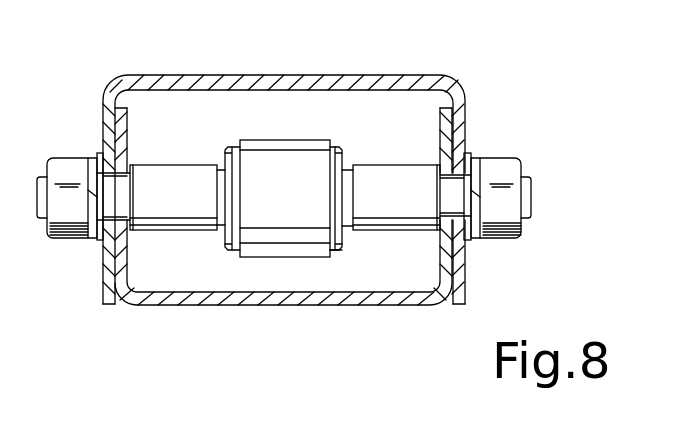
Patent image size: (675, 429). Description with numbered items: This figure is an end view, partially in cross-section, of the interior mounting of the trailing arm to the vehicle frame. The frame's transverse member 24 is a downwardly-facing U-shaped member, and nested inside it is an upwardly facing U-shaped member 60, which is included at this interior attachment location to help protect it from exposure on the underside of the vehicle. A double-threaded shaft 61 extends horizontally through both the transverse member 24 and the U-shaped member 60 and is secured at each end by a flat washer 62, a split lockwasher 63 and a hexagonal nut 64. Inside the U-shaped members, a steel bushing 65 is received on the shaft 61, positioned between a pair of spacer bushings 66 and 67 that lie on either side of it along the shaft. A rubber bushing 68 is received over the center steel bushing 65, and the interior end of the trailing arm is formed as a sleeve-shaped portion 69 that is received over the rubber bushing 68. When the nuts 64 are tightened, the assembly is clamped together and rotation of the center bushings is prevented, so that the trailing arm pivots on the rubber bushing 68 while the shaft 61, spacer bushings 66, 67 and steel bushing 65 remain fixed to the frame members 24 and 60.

The transverse member 24 is at (238, 85).
The U-shaped member 60 is at (300, 298).
The double-threaded shaft 61 is at (528, 180).
The flat washer 62 is at (468, 243).
The split lockwasher 63 is at (477, 172).
The hexagonal nut 64 is at (512, 237).
The steel bushing 65 is at (342, 245).
The spacer bushing 66 is at (182, 165).
The spacer bushing 67 is at (382, 168).
The rubber bushing 68 is at (328, 148).
The sleeve-shaped portion 69 is at (275, 150).